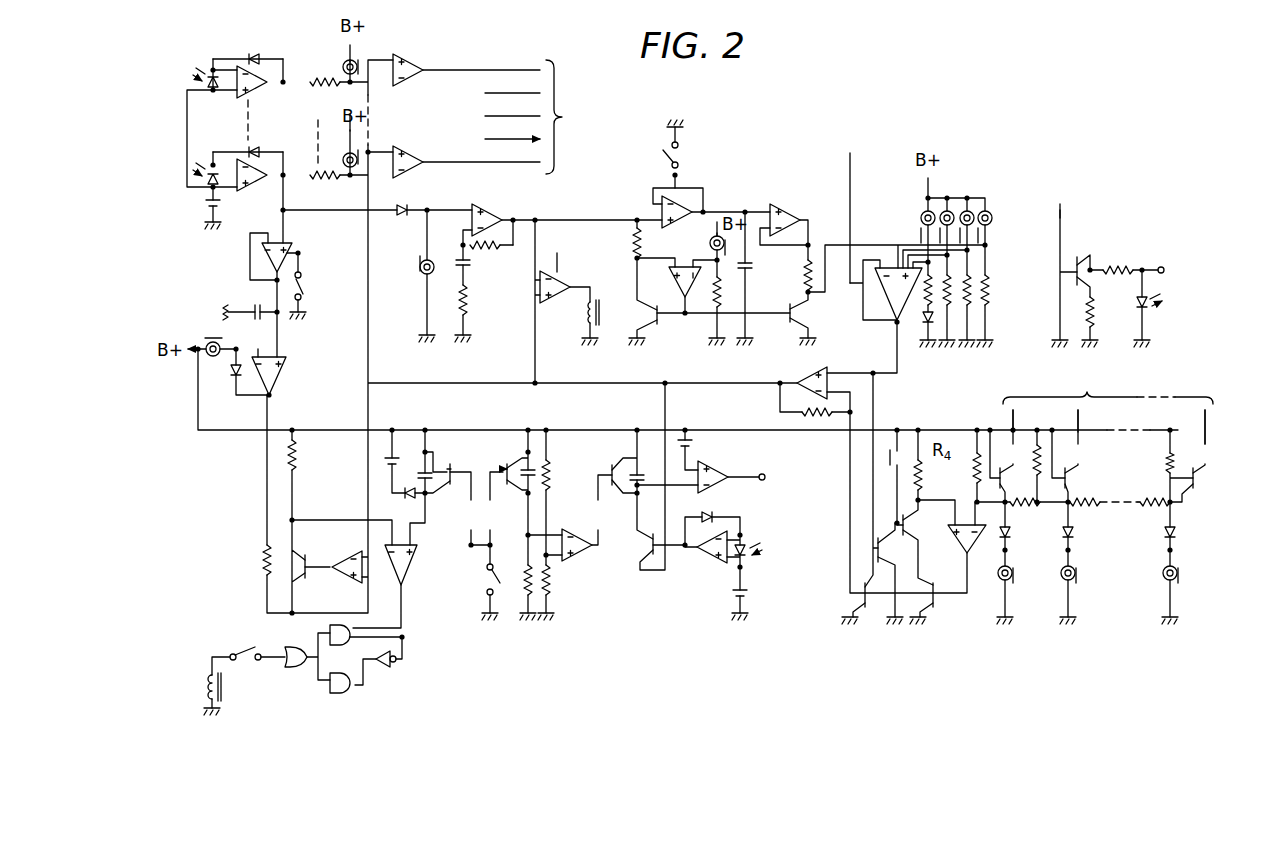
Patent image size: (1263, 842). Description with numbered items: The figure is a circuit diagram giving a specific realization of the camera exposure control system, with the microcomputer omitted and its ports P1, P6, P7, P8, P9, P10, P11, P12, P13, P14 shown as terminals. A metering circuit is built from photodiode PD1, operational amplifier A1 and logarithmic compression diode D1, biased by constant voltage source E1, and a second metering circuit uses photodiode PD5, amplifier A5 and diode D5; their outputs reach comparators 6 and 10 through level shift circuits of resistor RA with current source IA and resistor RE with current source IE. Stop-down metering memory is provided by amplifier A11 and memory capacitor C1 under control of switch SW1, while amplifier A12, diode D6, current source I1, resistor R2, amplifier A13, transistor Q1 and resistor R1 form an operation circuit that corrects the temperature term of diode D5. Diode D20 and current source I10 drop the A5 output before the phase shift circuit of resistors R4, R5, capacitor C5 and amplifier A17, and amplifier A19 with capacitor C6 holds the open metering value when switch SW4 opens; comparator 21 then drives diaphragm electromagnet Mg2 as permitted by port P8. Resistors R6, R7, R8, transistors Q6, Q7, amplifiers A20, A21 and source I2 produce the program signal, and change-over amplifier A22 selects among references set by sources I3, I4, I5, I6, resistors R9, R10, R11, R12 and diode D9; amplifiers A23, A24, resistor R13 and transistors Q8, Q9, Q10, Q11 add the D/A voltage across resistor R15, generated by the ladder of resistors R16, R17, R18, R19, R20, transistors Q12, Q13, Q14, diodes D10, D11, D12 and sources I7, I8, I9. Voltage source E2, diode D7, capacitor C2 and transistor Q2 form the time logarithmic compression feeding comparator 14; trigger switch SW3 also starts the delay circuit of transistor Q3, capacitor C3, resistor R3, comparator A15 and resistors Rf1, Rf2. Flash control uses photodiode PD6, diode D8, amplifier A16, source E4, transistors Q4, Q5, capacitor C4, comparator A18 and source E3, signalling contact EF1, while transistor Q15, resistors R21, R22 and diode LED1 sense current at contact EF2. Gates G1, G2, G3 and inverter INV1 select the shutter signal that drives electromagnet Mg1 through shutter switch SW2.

The logarithmic compression diode D1 is at (259, 59).
The operational amplifier A1 is at (256, 86).
The photodiode PD1 is at (216, 92).
The constant current source IA is at (343, 63).
The resistor RA is at (322, 96).
The comparator 6 is at (418, 62).
The comparator 10 is at (414, 155).
The port P1 is at (593, 117).
The logarithmic compression diode D5 is at (267, 150).
The operational amplifier A5 is at (253, 184).
The photodiode PD5 is at (206, 182).
The constant current source IE is at (346, 156).
The resistor RE is at (318, 185).
The constant voltage source E1 is at (207, 218).
The operational amplifier A11 is at (290, 244).
The port P11 is at (298, 253).
The stop-down memory switch SW1 is at (308, 284).
The memory capacitor C1 is at (251, 300).
The constant current source I1 is at (203, 341).
The diode D6 is at (231, 375).
The operational amplifier A12 is at (287, 361).
The diode D20 is at (404, 209).
The operational amplifier A17 is at (492, 214).
The resistor R4 is at (495, 250).
The capacitor C5 is at (470, 266).
The resistor R5 is at (468, 297).
The constant current source I10 is at (422, 276).
The diaphragm control comparator 21 is at (554, 304).
The output port P8 is at (561, 240).
The diaphragm control electromagnet Mg2 is at (600, 300).
The operational amplifier A19 is at (657, 206).
The open memory switch SW4 is at (670, 162).
The port P12 is at (675, 175).
The resistor R6 is at (634, 244).
The operational amplifier A21 is at (670, 284).
The transistor Q6 is at (655, 322).
The constant current source I2 is at (709, 241).
The resistor R8 is at (717, 287).
The memory capacitor C6 is at (750, 268).
The operational amplifier A20 is at (792, 214).
The resistor R7 is at (805, 272).
The transistor Q7 is at (790, 324).
The output port P9 is at (842, 141).
The constant current source I3 is at (920, 210).
The constant current source I4 is at (943, 206).
The constant current source I5 is at (970, 208).
The constant current source I6 is at (993, 218).
The resistor R9 is at (917, 298).
The resistor R10 is at (955, 280).
The resistor R11 is at (973, 285).
The resistor R12 is at (987, 287).
The diode D9 is at (924, 325).
The multi-input change-over operational amplifier A22 is at (895, 287).
The port P13 is at (1060, 190).
The transistor Q15 is at (1073, 272).
The resistor R21 is at (1114, 268).
The resistor R22 is at (1092, 304).
The hot shoe contact EF2 is at (1166, 268).
The light-emitting diode LED1 is at (1155, 312).
The operational amplifier A23 is at (817, 378).
The resistor R13 is at (786, 414).
The output port P10 is at (1093, 385).
The voltage source E2 is at (384, 455).
The integrating capacitor C2 is at (420, 472).
The time logarithmic compression voltage producing diode D7 is at (408, 497).
The resistor R1 is at (297, 451).
The resistor R2 is at (263, 556).
The transistor Q1 is at (310, 555).
The operational amplifier A13 is at (341, 580).
The comparator 14 is at (411, 570).
The integration start control transistor Q2 is at (456, 454).
The transistor Q3 is at (497, 470).
The trigger switch SW3 is at (500, 560).
The input port P14 is at (471, 545).
The integrating resistor R3 is at (527, 585).
The integrating capacitor C3 is at (536, 440).
The reference voltage setting resistor Rf1 is at (550, 477).
The reference voltage setting resistor Rf2 is at (550, 588).
The comparator A15 is at (574, 560).
The transistor Q4 is at (608, 457).
The integrating capacitor C4 is at (640, 476).
The transistor Q5 is at (649, 546).
The constant voltage source E3 is at (693, 444).
The comparator A18 is at (725, 482).
The hot shoe contact EF1 is at (779, 479).
The logarithmic compression diode D8 is at (701, 516).
The operational amplifier A16 is at (706, 558).
The photodiode PD6 is at (751, 560).
The constant voltage source E4 is at (748, 594).
The transistor Q8 is at (851, 592).
The transistor Q9 is at (937, 606).
The transistor Q10 is at (876, 557).
The transistor Q11 is at (910, 520).
The operational amplifier A24 is at (962, 539).
The resistor R15 is at (976, 473).
The transistor Q12 is at (1000, 475).
The resistor R16 is at (1017, 506).
The diode D10 is at (1012, 536).
The constant current source I7 is at (998, 578).
The resistor R17 is at (1034, 460).
The transistor Q13 is at (1071, 482).
The resistor R18 is at (1084, 506).
The diode D11 is at (1075, 536).
The constant current source I8 is at (1062, 578).
The resistor R19 is at (1150, 506).
The resistor R20 is at (1168, 465).
The diode D12 is at (1167, 536).
The constant current source I9 is at (1165, 578).
The transistor Q14 is at (1199, 489).
The shutter switch SW2 is at (238, 654).
The shutter control electromagnet Mg1 is at (223, 688).
The AND gate G1 is at (334, 644).
The AND gate G2 is at (341, 692).
The OR gate G3 is at (295, 664).
The inverter INV1 is at (388, 662).
The output port P6 is at (402, 637).
The output port P7 is at (350, 685).